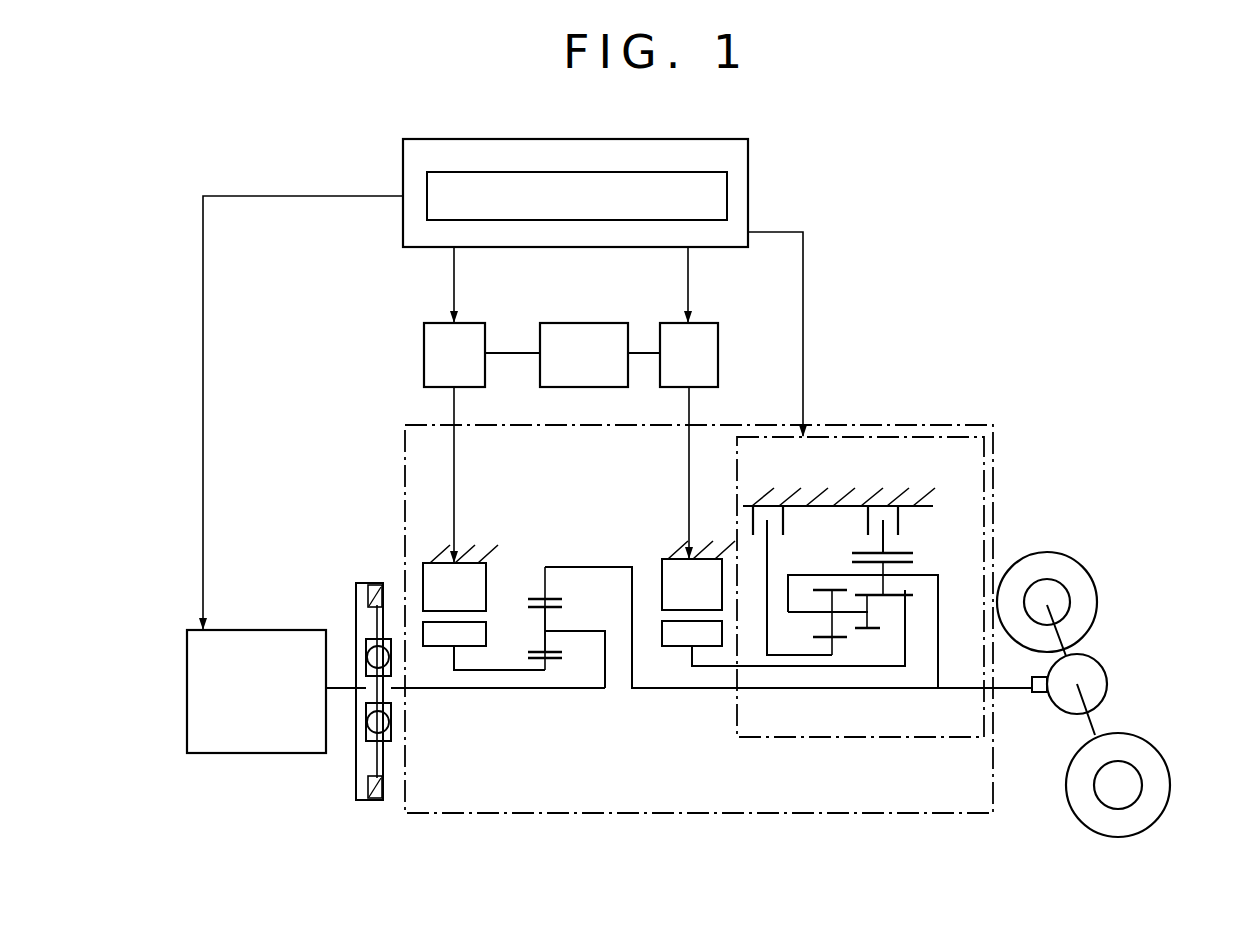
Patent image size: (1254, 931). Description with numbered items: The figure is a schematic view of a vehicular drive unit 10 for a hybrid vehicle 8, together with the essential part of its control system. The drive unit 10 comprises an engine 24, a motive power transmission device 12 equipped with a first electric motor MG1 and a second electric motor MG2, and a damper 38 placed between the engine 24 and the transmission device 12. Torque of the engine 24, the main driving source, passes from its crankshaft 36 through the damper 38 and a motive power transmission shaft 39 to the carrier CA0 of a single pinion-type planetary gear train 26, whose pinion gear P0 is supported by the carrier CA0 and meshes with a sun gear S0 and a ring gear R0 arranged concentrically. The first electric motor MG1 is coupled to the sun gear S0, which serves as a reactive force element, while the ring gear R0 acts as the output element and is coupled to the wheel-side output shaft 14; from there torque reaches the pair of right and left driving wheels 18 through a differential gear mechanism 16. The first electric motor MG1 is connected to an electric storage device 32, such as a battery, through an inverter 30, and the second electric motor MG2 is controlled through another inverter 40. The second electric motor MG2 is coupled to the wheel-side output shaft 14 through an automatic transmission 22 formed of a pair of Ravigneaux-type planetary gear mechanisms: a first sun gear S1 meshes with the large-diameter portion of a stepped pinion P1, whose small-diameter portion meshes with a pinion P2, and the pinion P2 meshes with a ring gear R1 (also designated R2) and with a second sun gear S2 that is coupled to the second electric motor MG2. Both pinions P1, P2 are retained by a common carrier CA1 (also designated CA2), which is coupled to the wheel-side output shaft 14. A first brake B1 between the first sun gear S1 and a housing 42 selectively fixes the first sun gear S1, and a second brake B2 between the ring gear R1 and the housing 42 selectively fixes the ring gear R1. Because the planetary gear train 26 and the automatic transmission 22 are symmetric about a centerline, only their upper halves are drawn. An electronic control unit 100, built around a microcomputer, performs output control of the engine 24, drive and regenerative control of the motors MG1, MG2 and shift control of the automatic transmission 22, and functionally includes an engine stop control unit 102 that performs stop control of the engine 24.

The hybrid vehicle 8 is at (907, 249).
The vehicular drive unit 10 is at (889, 354).
The motive power transmission device 12 is at (577, 815).
The wheel-side output shaft 14 is at (1020, 693).
The differential gear mechanism 16 is at (1090, 674).
The driving wheels 18 is at (1083, 586).
The automatic transmission 22 is at (990, 468).
The engine 24 is at (258, 652).
The planetary gear train 26 is at (754, 668).
The inverter 30 is at (474, 328).
The electric storage device 32 is at (570, 330).
The crankshaft 36 is at (343, 692).
The damper 38 is at (357, 574).
The motive power transmission shaft 39 is at (430, 693).
The inverter 40 is at (700, 330).
The housing 42 is at (835, 497).
The electronic control unit 100 is at (660, 139).
The engine stop control unit 102 is at (713, 197).
The first electric motor MG1 is at (484, 607).
The second electric motor MG2 is at (783, 603).
The ring gear R0 is at (538, 597).
The pinion gear P0 is at (540, 651).
The carrier CA0 is at (562, 629).
The sun gear S0 is at (557, 660).
The first brake B1 is at (770, 503).
The second brake B2 is at (873, 512).
The ring gear R1 is at (905, 545).
The ring gear R2 is at (955, 532).
The carrier CA1 is at (783, 598).
The carrier CA2 is at (825, 532).
The stepped pinion P1 is at (877, 628).
The pinion P2 is at (907, 563).
The first sun gear S1 is at (820, 652).
The second sun gear S2 is at (908, 597).